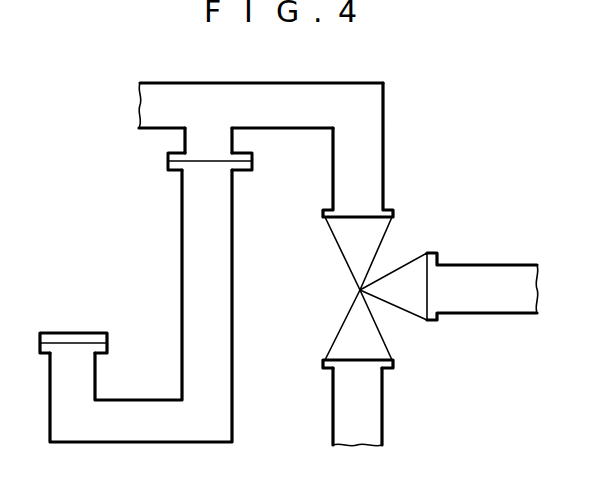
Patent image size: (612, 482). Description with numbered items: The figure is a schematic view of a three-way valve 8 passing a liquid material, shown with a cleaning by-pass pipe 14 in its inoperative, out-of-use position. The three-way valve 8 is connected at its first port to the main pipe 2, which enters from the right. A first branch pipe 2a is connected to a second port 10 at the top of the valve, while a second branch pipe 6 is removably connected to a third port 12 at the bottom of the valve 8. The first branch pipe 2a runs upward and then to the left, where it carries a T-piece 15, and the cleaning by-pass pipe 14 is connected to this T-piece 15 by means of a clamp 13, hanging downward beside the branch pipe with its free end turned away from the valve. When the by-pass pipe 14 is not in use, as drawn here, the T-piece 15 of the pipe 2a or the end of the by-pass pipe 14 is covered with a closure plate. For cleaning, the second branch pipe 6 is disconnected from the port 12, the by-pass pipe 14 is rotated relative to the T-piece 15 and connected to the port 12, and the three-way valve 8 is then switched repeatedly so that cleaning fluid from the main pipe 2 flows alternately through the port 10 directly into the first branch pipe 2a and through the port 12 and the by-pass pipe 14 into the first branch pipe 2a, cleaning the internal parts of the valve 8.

The main pipe 2 is at (513, 310).
The first branch pipe 2a is at (334, 88).
The second branch pipe 6 is at (370, 420).
The three-way valve 8 is at (333, 280).
The second port 10 is at (367, 215).
The third port 12 is at (360, 365).
The clamp 13 is at (167, 163).
The cleaning by-pass pipe 14 is at (193, 278).
The T-piece 15 is at (181, 138).